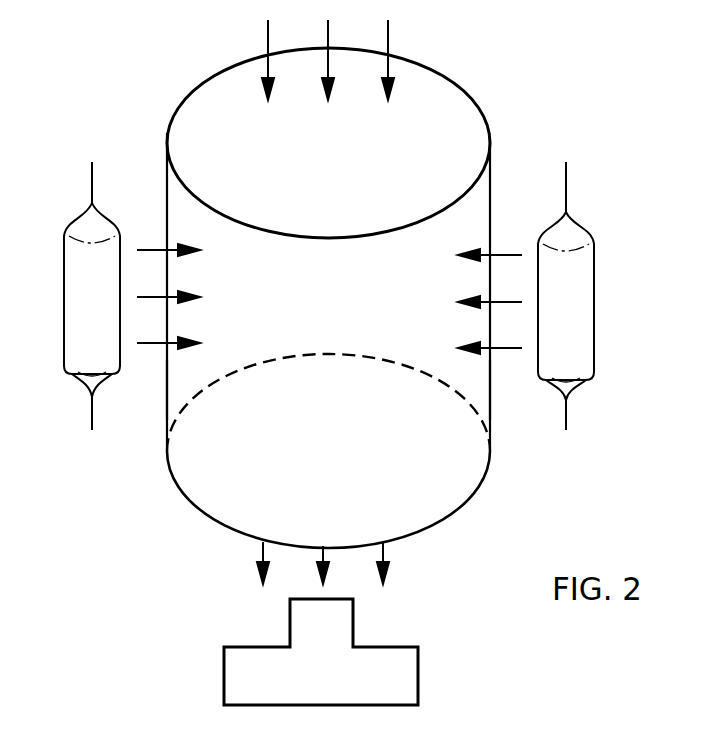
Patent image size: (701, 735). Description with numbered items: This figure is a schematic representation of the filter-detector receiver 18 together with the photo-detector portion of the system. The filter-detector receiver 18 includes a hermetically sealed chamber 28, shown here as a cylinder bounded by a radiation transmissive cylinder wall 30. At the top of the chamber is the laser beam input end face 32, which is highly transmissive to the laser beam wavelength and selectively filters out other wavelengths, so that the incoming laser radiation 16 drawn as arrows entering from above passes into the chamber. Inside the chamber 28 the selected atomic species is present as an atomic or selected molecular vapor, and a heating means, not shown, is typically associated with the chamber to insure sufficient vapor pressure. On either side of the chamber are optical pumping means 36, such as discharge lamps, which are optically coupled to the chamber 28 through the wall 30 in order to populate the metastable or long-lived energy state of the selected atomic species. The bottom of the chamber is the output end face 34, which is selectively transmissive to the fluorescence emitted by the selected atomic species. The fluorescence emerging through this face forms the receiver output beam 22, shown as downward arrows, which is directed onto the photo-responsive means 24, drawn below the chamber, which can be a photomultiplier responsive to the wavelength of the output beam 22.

The incident radiation 16 is at (388, 39).
The filter-detector receiver 18 is at (139, 94).
The receiver output beam 22 is at (385, 553).
The photo-responsive means 24 is at (418, 676).
The hermetically sealed chamber 28 is at (177, 192).
The radiation transmissive cylinder wall 30 is at (167, 390).
The laser beam input end face 32 is at (445, 120).
The output end face 34 is at (423, 485).
The optical pumping means 36 is at (64, 308).